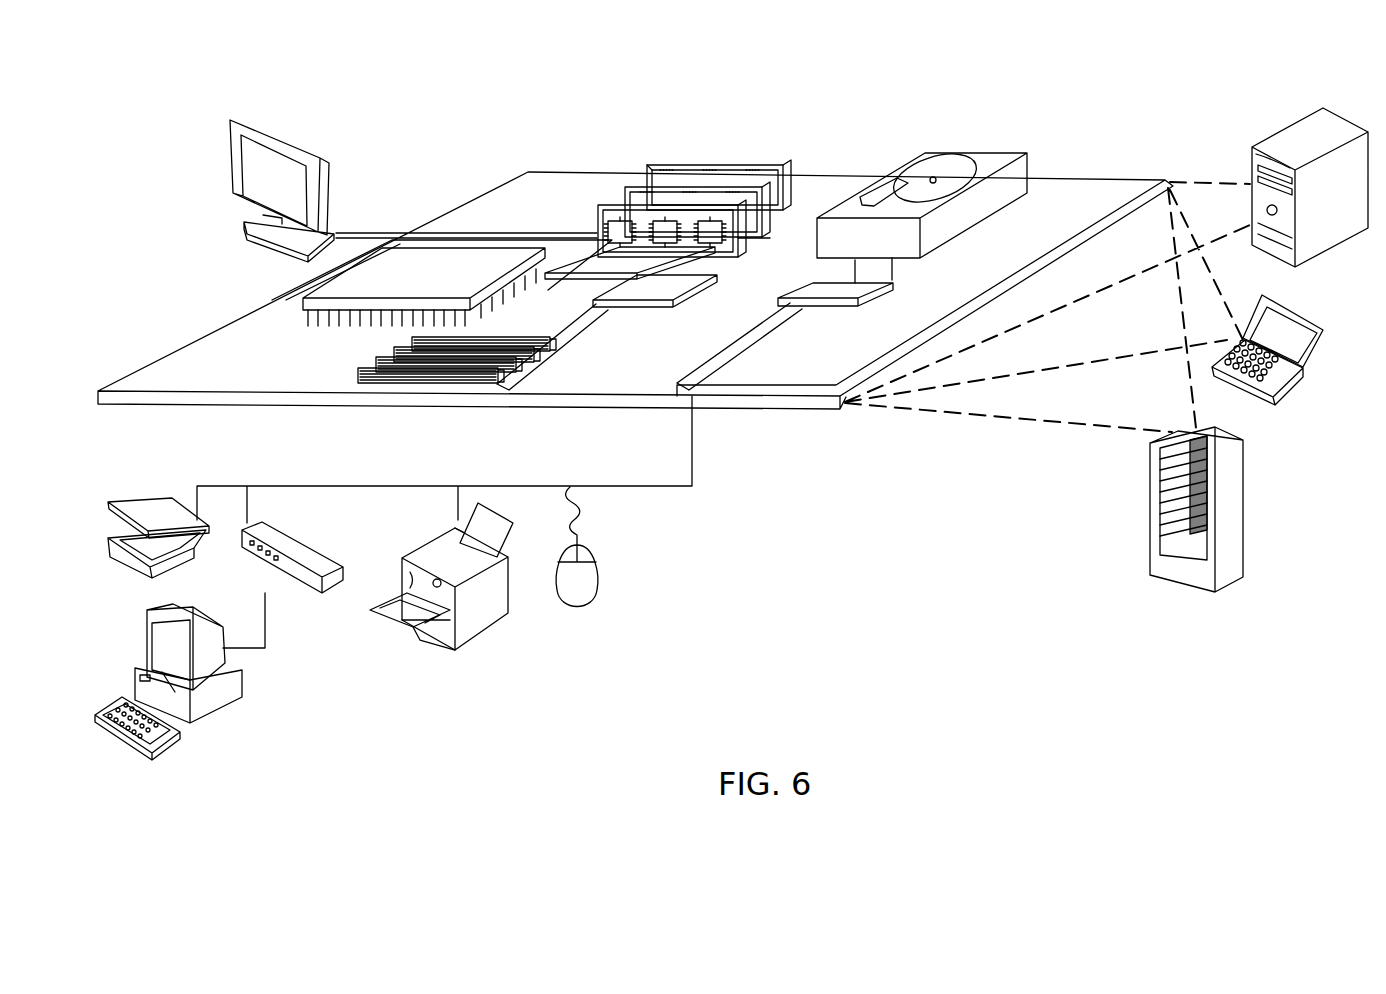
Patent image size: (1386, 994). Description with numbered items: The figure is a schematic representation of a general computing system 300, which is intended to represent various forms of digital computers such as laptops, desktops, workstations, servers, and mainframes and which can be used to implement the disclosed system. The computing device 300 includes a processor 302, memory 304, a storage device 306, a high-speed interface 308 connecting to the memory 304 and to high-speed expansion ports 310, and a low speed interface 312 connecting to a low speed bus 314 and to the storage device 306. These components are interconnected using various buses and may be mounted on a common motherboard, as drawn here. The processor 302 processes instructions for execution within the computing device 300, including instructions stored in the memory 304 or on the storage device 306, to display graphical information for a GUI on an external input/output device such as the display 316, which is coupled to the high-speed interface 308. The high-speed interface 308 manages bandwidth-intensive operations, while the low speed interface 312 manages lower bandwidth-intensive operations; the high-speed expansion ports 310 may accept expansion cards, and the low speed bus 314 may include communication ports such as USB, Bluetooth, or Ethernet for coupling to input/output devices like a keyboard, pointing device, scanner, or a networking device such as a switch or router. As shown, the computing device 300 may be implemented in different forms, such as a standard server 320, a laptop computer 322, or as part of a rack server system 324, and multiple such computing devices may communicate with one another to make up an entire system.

The computing device 300 is at (441, 140).
The processor 302 is at (280, 300).
The memory 304 is at (667, 163).
The storage device 306 is at (917, 153).
The high-speed interface 308 is at (580, 243).
The high-speed expansion ports 310 is at (373, 362).
The low speed interface 312 is at (810, 283).
The low speed bus 314 is at (703, 397).
The display 316 is at (234, 113).
The standard server 320 is at (1250, 163).
The laptop computer 322 is at (1318, 317).
The rack server system 324 is at (1150, 535).